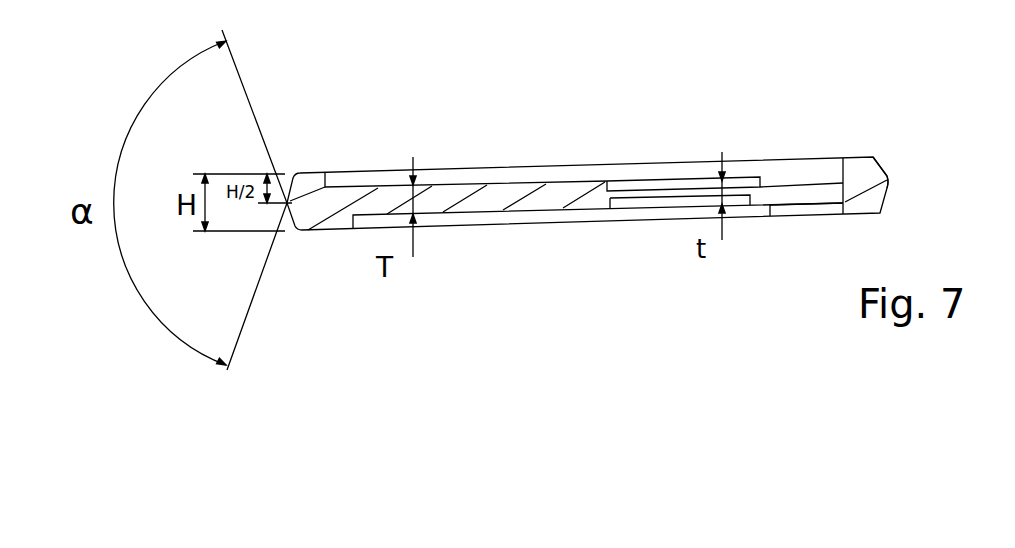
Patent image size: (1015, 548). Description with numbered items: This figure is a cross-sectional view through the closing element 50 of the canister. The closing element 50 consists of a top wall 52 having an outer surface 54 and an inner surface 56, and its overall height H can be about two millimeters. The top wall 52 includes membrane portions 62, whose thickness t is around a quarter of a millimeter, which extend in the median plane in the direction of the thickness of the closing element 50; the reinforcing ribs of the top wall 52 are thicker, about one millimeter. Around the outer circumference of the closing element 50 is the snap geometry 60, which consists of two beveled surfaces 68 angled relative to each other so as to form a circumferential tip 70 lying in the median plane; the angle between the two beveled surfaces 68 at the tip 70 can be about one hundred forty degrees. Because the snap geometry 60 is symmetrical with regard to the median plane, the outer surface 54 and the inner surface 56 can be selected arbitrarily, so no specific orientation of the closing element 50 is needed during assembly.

The closing element 50 is at (420, 105).
The top wall 52 is at (537, 173).
The outer surface 54 is at (647, 178).
The inner surface 56 is at (503, 222).
The snap geometry 60 is at (892, 180).
The membrane portions 62 is at (792, 200).
The beveled surfaces 68 is at (889, 163).
The circumferential tip 70 is at (888, 189).